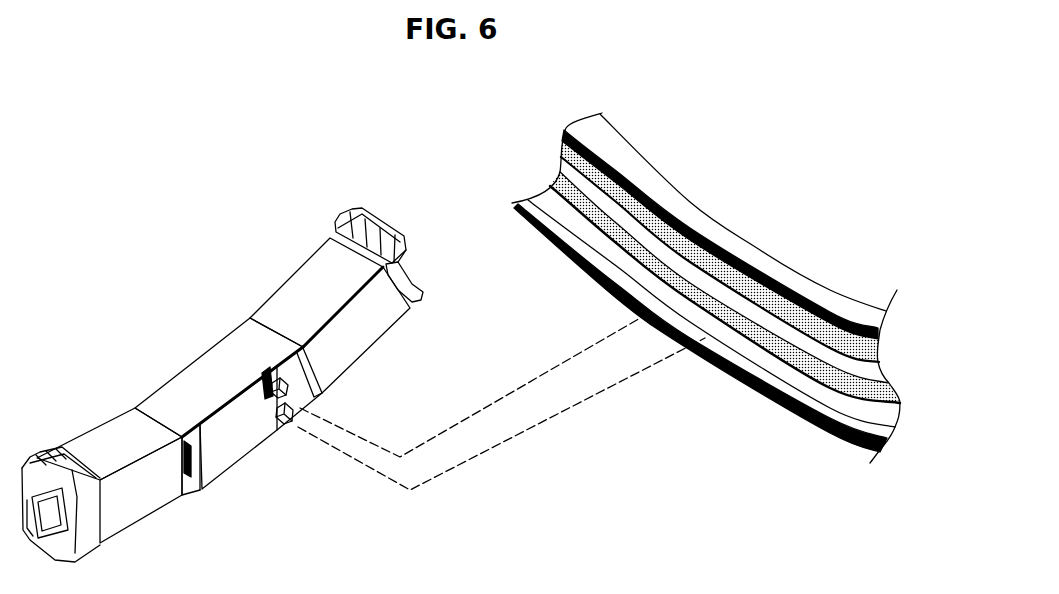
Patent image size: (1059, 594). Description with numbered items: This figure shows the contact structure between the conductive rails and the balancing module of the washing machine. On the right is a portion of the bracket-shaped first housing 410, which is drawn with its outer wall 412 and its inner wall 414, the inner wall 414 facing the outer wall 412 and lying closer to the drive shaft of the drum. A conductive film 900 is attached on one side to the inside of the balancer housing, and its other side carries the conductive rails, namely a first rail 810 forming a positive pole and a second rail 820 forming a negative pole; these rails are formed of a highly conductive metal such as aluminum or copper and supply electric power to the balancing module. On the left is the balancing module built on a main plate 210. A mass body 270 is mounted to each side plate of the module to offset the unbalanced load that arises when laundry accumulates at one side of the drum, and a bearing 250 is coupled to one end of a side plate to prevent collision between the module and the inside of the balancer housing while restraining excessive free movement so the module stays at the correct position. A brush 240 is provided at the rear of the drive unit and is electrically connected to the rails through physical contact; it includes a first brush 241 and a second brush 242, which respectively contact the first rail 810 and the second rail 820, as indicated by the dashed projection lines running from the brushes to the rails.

The main plate 210 is at (205, 372).
The brush 240 is at (273, 467).
The first brush 241 is at (273, 392).
The second brush 242 is at (280, 422).
The bearing 250 is at (370, 213).
The mass body 270 is at (353, 338).
The first housing 410 is at (696, 288).
The outer wall 412 is at (742, 357).
The inner wall 414 is at (787, 268).
The first rail 810 is at (562, 142).
The second rail 820 is at (558, 176).
The conductive film 900 is at (702, 236).